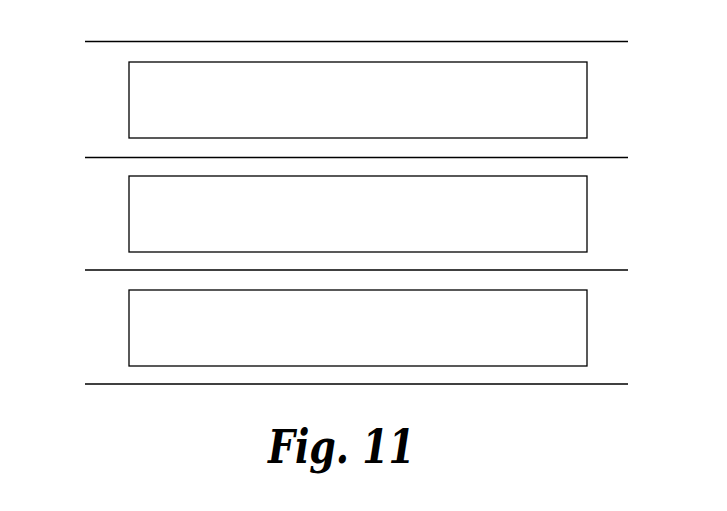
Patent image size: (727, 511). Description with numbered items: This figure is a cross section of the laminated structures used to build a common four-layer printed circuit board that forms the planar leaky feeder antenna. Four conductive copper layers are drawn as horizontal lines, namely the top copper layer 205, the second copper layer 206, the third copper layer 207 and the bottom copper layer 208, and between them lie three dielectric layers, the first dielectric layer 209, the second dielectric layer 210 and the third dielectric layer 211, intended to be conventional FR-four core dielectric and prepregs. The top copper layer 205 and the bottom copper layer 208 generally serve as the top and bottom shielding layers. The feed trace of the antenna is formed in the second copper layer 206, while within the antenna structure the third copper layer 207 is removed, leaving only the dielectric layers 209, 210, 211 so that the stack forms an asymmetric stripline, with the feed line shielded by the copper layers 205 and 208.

The top copper layer 205 is at (332, 44).
The second copper layer 206 is at (332, 160).
The third copper layer 207 is at (332, 272).
The bottom copper layer 208 is at (332, 387).
The first dielectric layer 209 is at (358, 100).
The second dielectric layer 210 is at (358, 214).
The third dielectric layer 211 is at (358, 328).